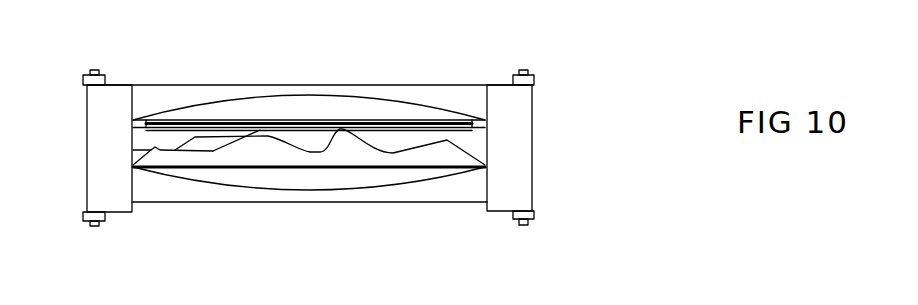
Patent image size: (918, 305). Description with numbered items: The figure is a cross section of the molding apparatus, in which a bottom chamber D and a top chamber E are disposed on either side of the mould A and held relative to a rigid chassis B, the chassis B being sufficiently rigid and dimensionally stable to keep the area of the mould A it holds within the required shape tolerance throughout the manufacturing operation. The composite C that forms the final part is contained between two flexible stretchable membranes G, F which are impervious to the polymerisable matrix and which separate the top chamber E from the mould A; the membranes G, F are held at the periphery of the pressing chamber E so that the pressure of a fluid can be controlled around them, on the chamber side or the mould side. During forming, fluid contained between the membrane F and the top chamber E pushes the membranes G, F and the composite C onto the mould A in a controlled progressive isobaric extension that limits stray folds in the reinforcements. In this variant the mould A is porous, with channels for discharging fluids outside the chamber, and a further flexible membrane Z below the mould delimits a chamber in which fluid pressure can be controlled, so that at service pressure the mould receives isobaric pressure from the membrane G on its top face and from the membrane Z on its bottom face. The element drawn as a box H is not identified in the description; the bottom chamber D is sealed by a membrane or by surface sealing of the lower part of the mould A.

The mould A is at (487, 138).
The chassis B is at (110, 188).
The composite C is at (460, 120).
The bottom chamber D is at (207, 190).
The top chamber E is at (508, 92).
The membrane F is at (123, 97).
The membrane G is at (133, 152).
The right flange H is at (625, 172).
The flexible membrane Z is at (317, 168).